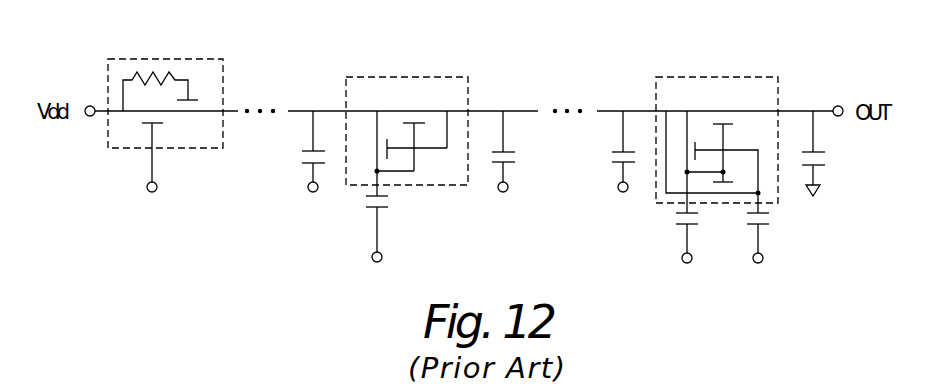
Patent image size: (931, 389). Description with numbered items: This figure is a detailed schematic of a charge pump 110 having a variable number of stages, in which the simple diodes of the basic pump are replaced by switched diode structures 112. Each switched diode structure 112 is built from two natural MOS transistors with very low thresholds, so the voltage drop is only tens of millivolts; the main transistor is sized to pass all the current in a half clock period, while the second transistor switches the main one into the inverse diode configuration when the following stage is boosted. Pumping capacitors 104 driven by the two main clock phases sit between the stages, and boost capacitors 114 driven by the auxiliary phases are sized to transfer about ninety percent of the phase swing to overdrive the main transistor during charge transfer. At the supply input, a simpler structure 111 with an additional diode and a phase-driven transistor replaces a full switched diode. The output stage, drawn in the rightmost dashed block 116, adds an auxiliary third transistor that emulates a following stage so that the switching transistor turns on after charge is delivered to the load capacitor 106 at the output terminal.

The charge pump 110 is at (117, 48).
The structure 111 is at (197, 58).
The switched diode structure 112 is at (440, 73).
The last stage transistor block 116 is at (750, 75).
The pumping capacitor 104 is at (302, 150).
The boost capacitor 114 is at (384, 209).
The load capacitor 106 is at (818, 168).